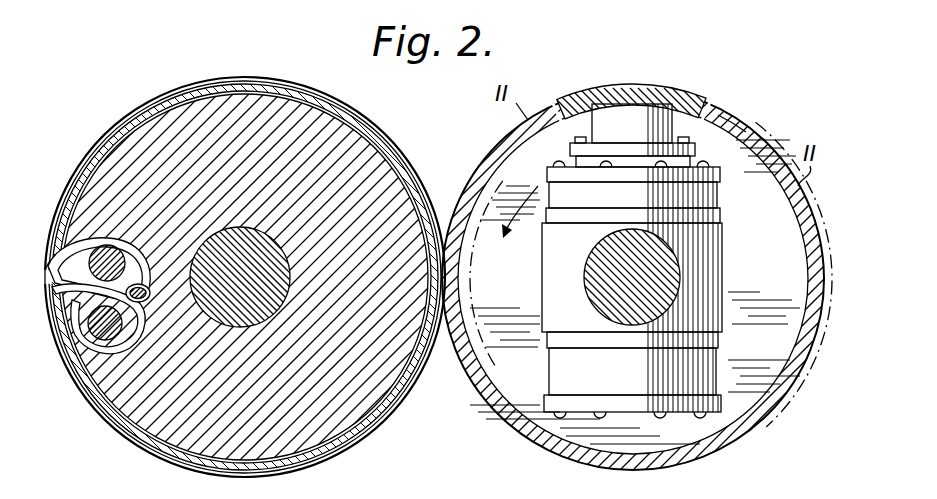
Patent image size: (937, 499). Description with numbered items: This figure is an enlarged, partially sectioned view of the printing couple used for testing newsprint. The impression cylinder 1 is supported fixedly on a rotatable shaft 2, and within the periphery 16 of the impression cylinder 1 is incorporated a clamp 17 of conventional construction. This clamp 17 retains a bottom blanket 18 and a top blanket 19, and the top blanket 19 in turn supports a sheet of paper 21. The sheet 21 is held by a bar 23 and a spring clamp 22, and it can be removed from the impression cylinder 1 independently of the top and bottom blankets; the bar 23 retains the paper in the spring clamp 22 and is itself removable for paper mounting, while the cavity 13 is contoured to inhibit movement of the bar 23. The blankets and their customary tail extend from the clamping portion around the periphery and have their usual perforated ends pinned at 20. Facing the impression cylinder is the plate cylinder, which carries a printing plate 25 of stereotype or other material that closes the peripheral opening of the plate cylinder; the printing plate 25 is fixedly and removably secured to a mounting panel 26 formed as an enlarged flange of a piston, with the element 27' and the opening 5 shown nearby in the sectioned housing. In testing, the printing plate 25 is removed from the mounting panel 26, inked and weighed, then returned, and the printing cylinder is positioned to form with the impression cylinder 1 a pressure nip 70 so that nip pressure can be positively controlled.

The impression cylinder 1 is at (346, 365).
The rotatable shaft 2 is at (289, 274).
The opening in hub housing 5 is at (600, 276).
The cavity 13 is at (150, 280).
The periphery 16 is at (93, 186).
The clamp 17 is at (44, 268).
The bottom blanket 18 is at (407, 395).
The top blanket 19 is at (406, 378).
The pinned perforated ends 20 is at (70, 338).
The sheet of paper 21 is at (379, 430).
The spring clamp 22 is at (141, 298).
The bar 23 is at (140, 303).
The printing plate 25 is at (690, 104).
The mounting panel 26 is at (606, 100).
The rim edge 27' is at (760, 113).
The pressure nip 70 is at (447, 226).